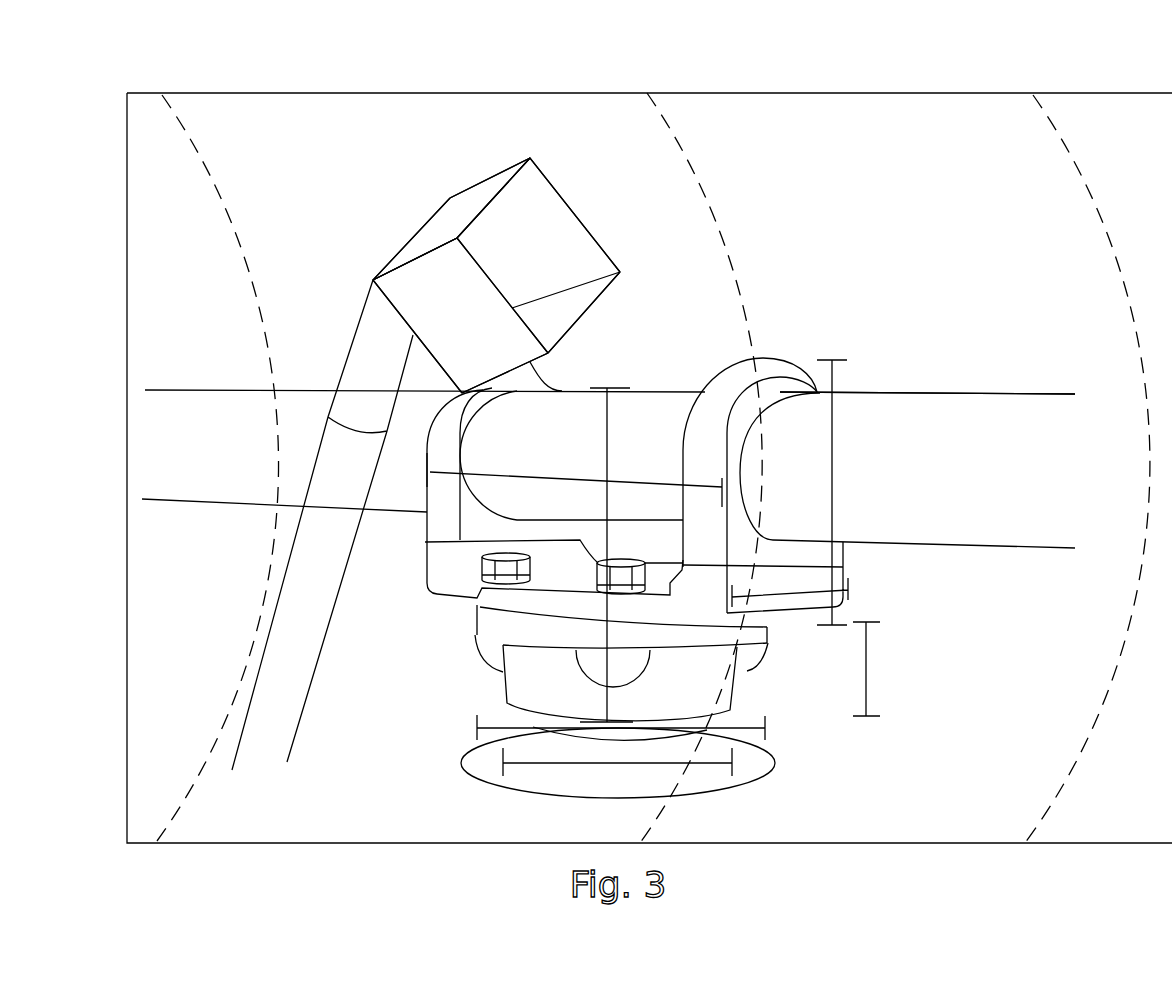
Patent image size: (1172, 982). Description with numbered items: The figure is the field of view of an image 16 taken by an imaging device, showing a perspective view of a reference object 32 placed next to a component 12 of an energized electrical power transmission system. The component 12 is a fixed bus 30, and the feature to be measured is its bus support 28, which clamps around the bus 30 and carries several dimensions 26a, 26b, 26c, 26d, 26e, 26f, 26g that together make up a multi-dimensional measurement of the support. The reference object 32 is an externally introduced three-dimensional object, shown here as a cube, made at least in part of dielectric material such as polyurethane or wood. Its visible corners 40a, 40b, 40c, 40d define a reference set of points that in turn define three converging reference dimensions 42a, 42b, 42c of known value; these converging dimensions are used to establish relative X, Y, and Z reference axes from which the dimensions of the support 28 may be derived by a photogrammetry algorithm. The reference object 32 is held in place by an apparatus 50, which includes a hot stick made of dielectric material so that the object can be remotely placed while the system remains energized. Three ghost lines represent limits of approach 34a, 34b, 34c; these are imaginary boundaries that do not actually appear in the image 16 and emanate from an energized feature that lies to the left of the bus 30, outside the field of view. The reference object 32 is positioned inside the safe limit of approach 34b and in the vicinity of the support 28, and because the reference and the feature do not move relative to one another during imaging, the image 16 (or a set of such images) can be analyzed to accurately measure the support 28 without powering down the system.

The component 12 is at (1040, 376).
The image 16 is at (127, 722).
The dimension 26a is at (833, 382).
The dimension 26b is at (788, 594).
The dimension 26c is at (868, 690).
The dimension 26d is at (528, 763).
The dimension 26e is at (493, 723).
The dimension 26f is at (488, 487).
The dimension 26g is at (607, 438).
The bus support 28 is at (800, 352).
The fixed bus 30 is at (942, 392).
The reference object 32 is at (593, 235).
The limit of approach 34a is at (203, 157).
The limit of approach 34b is at (680, 140).
The limit of approach 34c is at (1052, 123).
The corner 40a is at (460, 238).
The corner 40b is at (530, 158).
The corner 40c is at (373, 280).
The corner 40d is at (560, 345).
The converging reference dimension 42a is at (493, 200).
The converging reference dimension 42b is at (433, 249).
The converging reference dimension 42c is at (550, 333).
The apparatus 50 is at (285, 557).